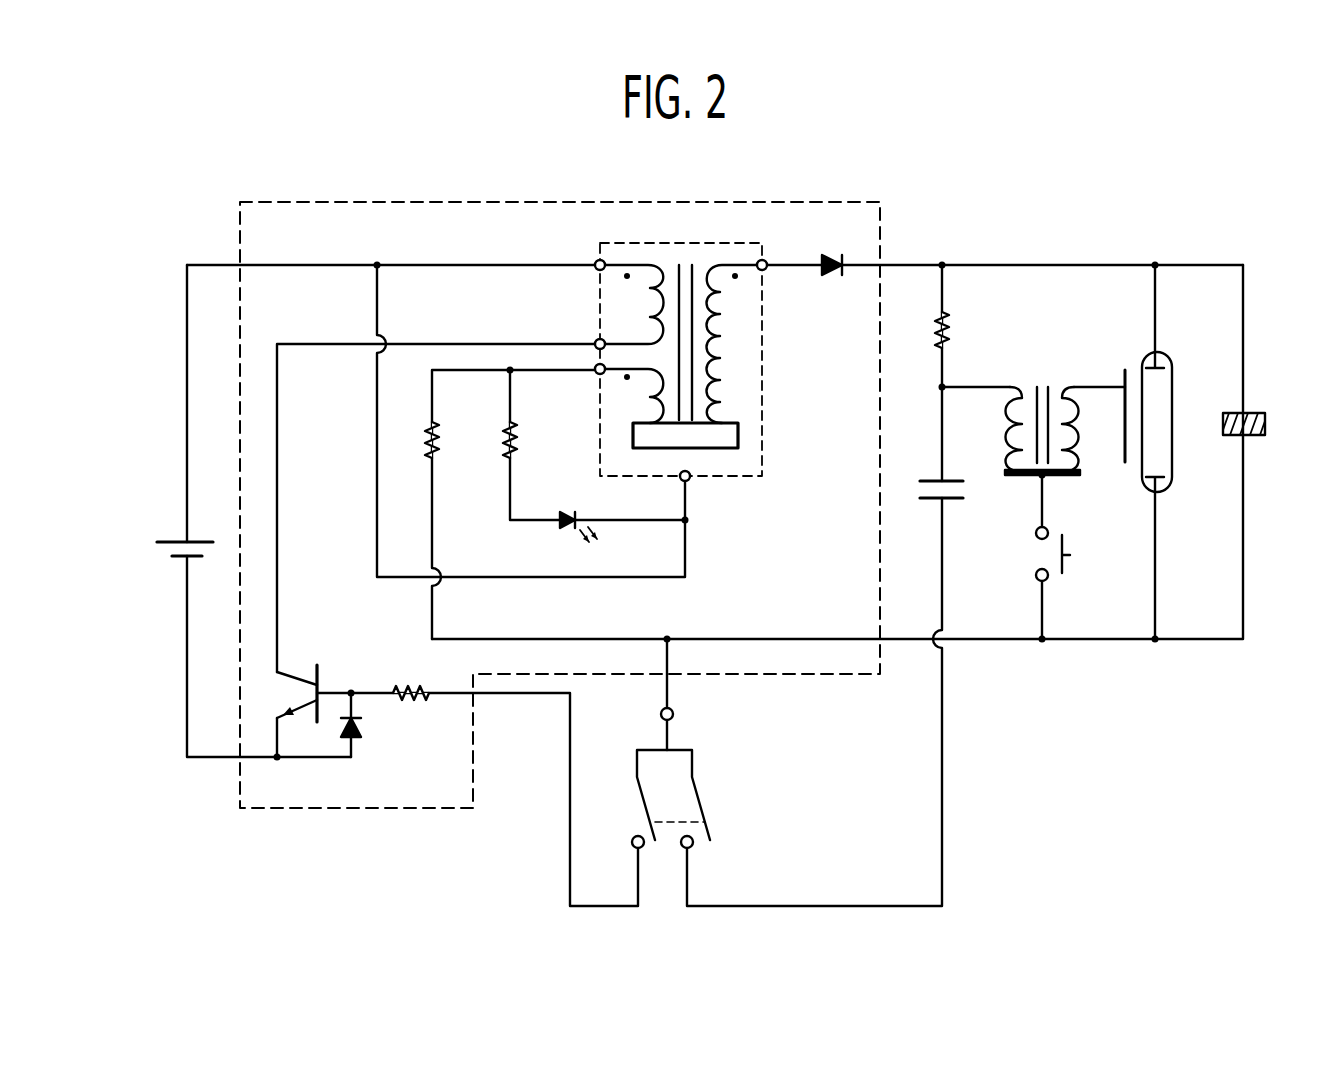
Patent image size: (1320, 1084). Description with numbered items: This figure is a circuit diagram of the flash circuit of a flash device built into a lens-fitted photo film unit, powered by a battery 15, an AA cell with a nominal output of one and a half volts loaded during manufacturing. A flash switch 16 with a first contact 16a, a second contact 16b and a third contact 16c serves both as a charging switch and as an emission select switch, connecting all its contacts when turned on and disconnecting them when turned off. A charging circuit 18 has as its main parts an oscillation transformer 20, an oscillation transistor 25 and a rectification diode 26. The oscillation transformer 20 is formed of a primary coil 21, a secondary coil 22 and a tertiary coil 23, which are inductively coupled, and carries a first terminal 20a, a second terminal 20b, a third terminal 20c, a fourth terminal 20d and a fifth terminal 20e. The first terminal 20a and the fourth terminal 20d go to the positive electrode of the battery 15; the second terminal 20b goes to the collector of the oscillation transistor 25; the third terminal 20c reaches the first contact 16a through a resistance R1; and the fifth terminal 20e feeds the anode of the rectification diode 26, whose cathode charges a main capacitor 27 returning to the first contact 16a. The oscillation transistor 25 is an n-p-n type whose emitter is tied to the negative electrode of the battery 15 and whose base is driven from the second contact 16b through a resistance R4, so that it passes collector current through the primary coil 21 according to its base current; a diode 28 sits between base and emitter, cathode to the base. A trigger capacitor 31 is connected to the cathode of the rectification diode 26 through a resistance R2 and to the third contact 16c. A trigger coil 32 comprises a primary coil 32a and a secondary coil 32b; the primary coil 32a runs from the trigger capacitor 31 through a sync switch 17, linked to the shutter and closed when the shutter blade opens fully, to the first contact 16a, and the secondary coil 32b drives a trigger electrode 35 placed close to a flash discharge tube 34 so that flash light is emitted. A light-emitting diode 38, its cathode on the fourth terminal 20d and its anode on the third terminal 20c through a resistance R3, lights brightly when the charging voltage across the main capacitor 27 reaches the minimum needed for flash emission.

The battery 15 is at (172, 540).
The flash switch 16 is at (690, 765).
The first contact 16a is at (674, 714).
The second contact 16b is at (632, 840).
The third contact 16c is at (691, 847).
The sync switch 17 is at (1063, 568).
The charging circuit 18 is at (880, 238).
The oscillation transformer 20 is at (762, 455).
The first terminal 20a is at (597, 262).
The second terminal 20b is at (597, 341).
The third terminal 20c is at (597, 373).
The fourth terminal 20d is at (688, 480).
The fifth terminal 20e is at (765, 269).
The primary coil 21 is at (667, 263).
The secondary coil 22 is at (722, 412).
The tertiary coil 23 is at (650, 413).
The oscillation transistor 25 is at (328, 663).
The rectification diode 26 is at (820, 263).
The main capacitor 27 is at (1252, 412).
The diode 28 is at (363, 726).
The trigger capacitor 31 is at (925, 481).
The trigger coil 32 is at (1045, 457).
The primary coil 32a is at (1022, 388).
The secondary coil 32b is at (1062, 388).
The flash discharge tube 34 is at (1173, 453).
The trigger electrode 35 is at (1120, 440).
The light-emitting diode 38 is at (558, 530).
The resistance R1 is at (437, 458).
The resistance R2 is at (944, 318).
The resistance R3 is at (515, 455).
The resistance R4 is at (405, 700).